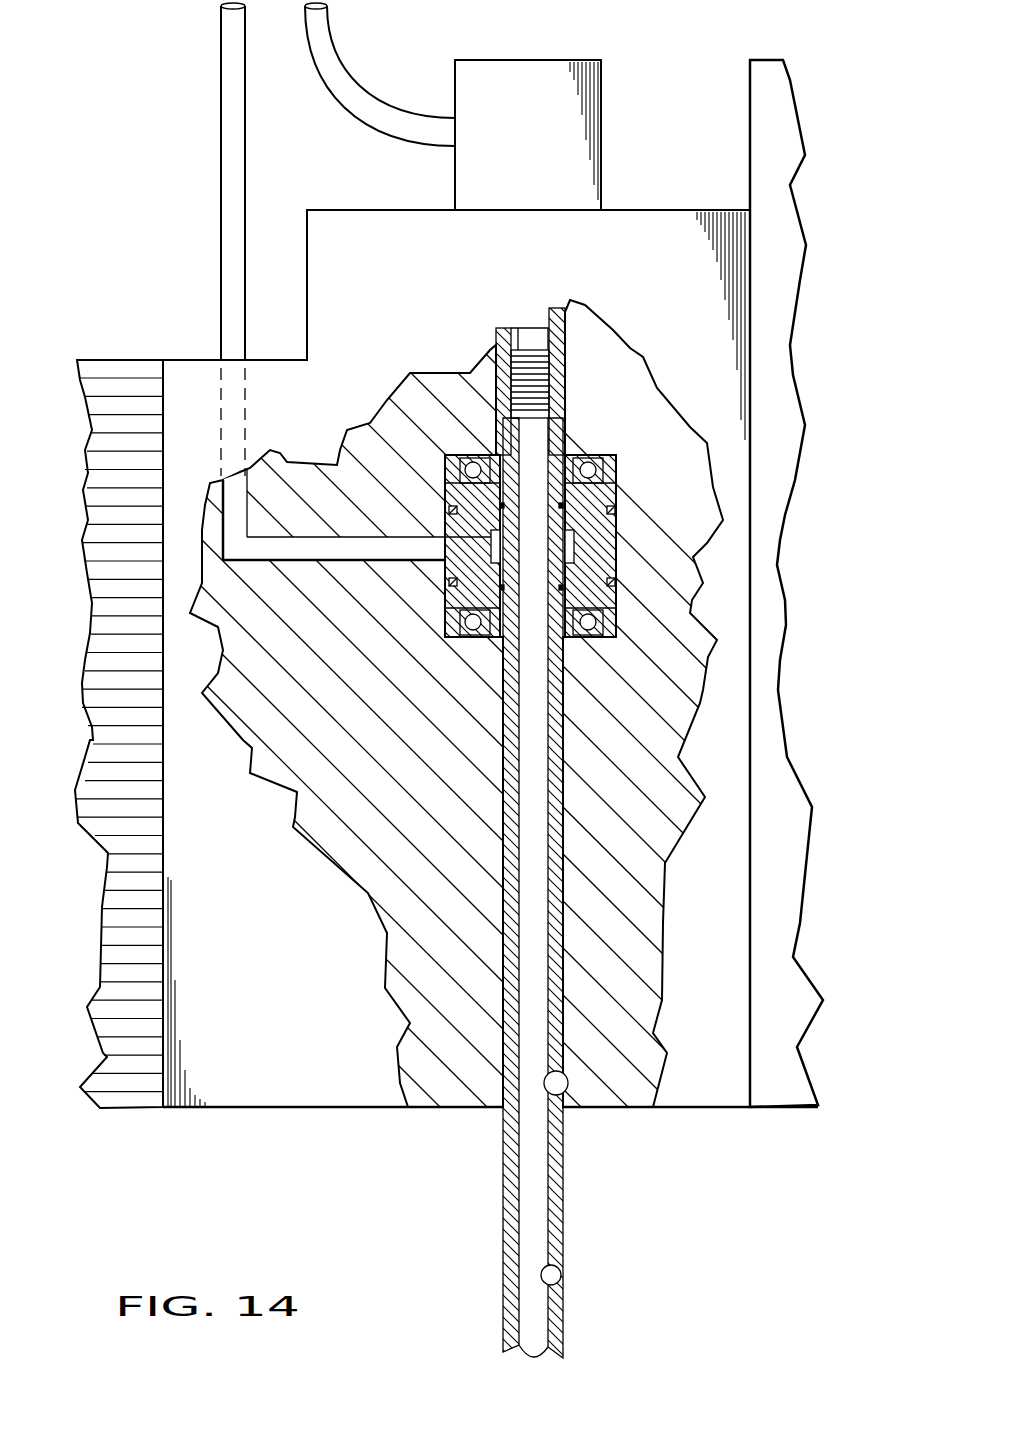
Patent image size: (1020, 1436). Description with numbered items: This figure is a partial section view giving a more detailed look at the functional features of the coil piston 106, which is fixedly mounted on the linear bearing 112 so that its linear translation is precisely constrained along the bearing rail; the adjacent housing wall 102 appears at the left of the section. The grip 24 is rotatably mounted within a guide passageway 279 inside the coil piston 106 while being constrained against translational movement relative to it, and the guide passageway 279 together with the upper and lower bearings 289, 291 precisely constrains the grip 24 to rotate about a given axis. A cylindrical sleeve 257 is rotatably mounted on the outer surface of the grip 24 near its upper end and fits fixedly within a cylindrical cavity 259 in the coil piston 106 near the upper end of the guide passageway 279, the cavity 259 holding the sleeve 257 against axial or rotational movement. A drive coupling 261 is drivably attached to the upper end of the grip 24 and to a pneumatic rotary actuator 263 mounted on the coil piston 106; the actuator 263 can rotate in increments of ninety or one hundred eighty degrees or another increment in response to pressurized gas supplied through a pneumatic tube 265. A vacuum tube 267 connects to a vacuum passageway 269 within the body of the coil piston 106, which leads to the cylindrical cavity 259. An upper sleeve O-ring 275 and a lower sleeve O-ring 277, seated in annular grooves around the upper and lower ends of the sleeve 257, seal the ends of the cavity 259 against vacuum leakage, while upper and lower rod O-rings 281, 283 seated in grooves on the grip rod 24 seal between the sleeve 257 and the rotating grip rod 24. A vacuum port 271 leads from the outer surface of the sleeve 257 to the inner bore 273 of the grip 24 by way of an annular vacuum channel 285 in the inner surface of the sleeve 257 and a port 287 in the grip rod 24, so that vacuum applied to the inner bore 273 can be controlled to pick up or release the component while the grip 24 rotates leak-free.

The grip 24 is at (503, 1192).
The wall 102 is at (113, 388).
The coil piston 106 is at (660, 238).
The linear bearing 112 is at (778, 122).
The cylindrical sleeve 257 is at (447, 602).
The cylindrical cavity 259 is at (597, 458).
The drive coupling 261 is at (553, 337).
The pneumatic rotary actuator 263 is at (548, 143).
The pneumatic tube 265 is at (352, 98).
The vacuum tube 267 is at (228, 65).
The vacuum passageway 269 is at (315, 548).
The vacuum port 271 is at (443, 570).
The inner bore 273 is at (552, 1286).
The upper sleeve O-ring 275 is at (615, 512).
The lower sleeve O-ring 277 is at (615, 583).
The guide passageway 279 is at (563, 1115).
The upper rod O-ring 281 is at (614, 492).
The lower rod O-ring 283 is at (614, 612).
The annular vacuum channel 285 is at (568, 547).
The port 287 is at (447, 510).
The upper bearing 289 is at (465, 460).
The lower bearing 291 is at (592, 640).